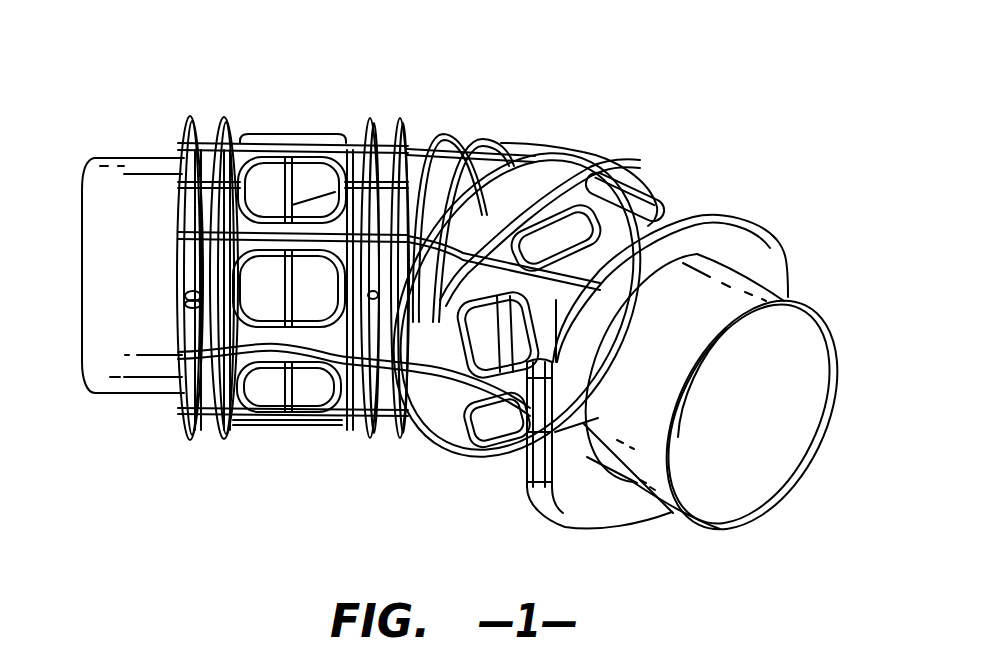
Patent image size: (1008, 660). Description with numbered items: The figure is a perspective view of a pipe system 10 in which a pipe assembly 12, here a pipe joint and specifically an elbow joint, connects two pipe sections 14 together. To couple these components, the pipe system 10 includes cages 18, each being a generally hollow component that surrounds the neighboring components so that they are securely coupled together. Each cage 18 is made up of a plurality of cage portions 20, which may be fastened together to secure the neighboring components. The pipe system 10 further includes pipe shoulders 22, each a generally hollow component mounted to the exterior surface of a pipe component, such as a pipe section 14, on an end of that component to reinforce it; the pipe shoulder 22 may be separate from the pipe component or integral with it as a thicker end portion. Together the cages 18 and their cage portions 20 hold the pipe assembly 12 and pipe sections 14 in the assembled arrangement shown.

The pipe system 10 is at (621, 104).
The pipe assembly 12 is at (470, 122).
The pipe section 14 is at (137, 142).
The cage 18 is at (222, 104).
The cage portion 20 is at (315, 142).
The pipe shoulder 22 is at (264, 184).